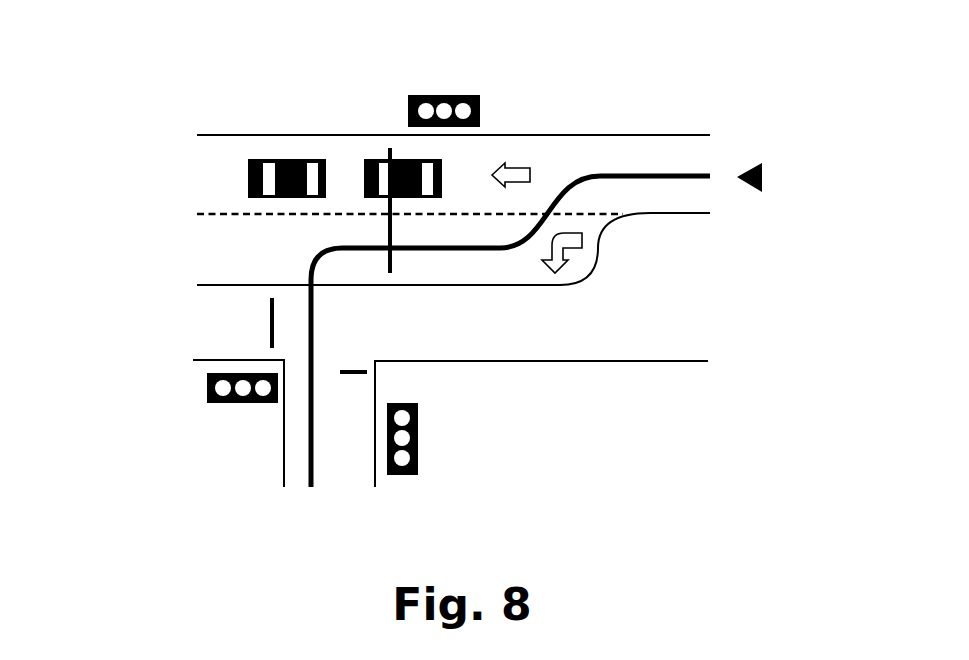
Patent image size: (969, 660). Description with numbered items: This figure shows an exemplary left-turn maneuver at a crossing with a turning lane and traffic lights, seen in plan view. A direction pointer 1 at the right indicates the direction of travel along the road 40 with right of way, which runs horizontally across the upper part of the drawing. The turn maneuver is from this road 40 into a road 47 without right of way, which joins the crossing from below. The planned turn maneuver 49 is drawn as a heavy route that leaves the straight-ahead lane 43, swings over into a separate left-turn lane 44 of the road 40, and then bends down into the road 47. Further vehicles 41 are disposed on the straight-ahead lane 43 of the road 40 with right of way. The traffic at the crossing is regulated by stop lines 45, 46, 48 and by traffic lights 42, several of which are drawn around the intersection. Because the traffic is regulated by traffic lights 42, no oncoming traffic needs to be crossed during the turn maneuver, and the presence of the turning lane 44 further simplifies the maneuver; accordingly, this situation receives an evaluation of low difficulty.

The direction pointer 1 is at (773, 185).
The road with right of way 40 is at (210, 173).
The further vehicles 41 is at (277, 159).
The traffic lights 42 is at (482, 108).
The straight-ahead lane 43 is at (517, 160).
The left-turn lane 44 is at (580, 260).
The stop line 45 is at (392, 262).
The stop line 46 is at (372, 373).
The road without right of way 47 is at (334, 434).
The stop line 48 is at (259, 323).
The planned turn maneuver 49 is at (620, 173).